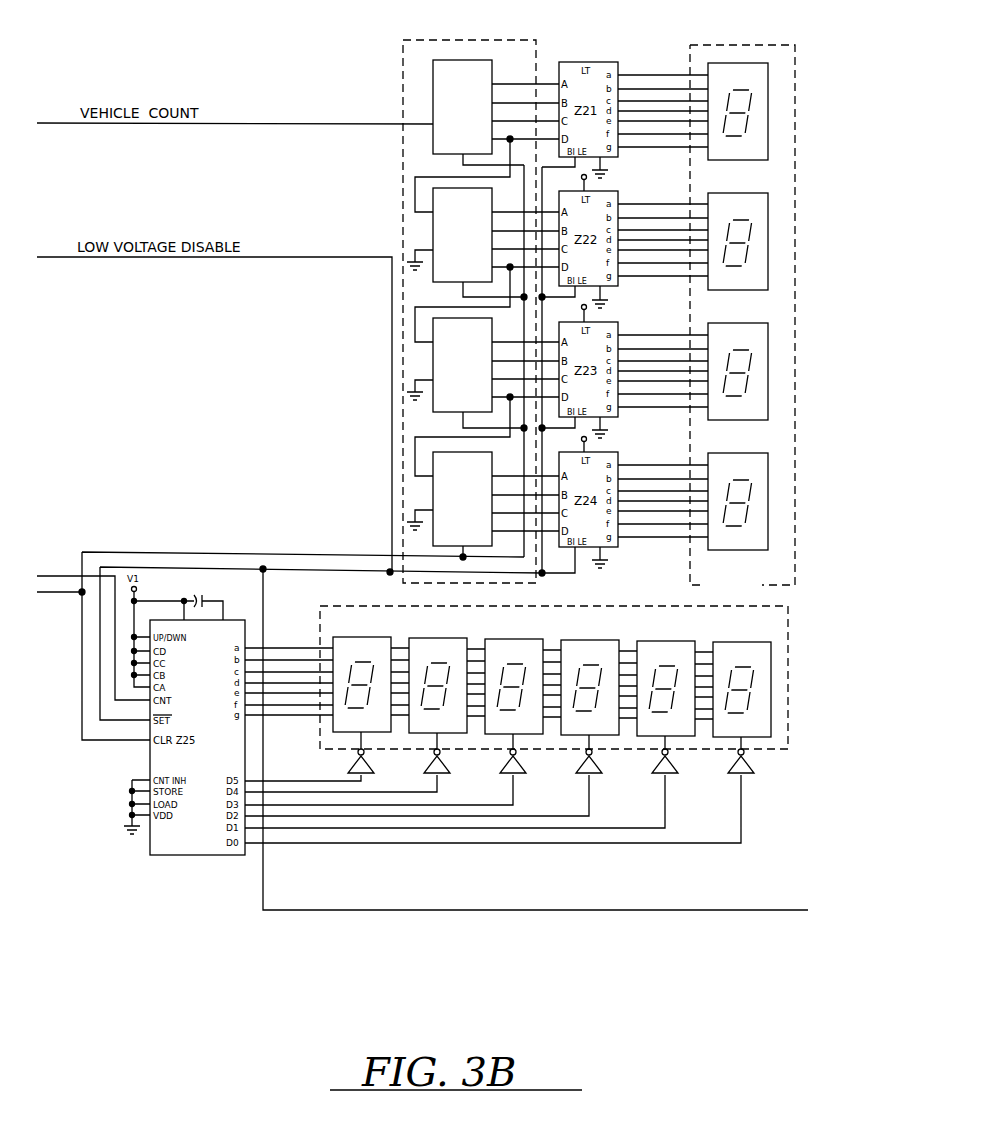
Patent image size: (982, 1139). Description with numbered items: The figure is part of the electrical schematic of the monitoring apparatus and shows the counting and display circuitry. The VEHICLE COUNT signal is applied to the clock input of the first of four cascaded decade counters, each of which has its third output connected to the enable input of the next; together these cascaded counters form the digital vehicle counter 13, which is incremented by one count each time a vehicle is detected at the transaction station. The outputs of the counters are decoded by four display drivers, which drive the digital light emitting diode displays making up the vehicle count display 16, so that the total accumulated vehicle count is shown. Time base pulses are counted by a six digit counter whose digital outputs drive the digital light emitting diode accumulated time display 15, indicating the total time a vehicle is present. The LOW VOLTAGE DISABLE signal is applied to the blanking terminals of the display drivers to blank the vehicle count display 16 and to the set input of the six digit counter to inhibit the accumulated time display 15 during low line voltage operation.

The vehicle counter 13 is at (403, 48).
The accumulated time display 15 is at (320, 612).
The vehicle count display 16 is at (716, 45).